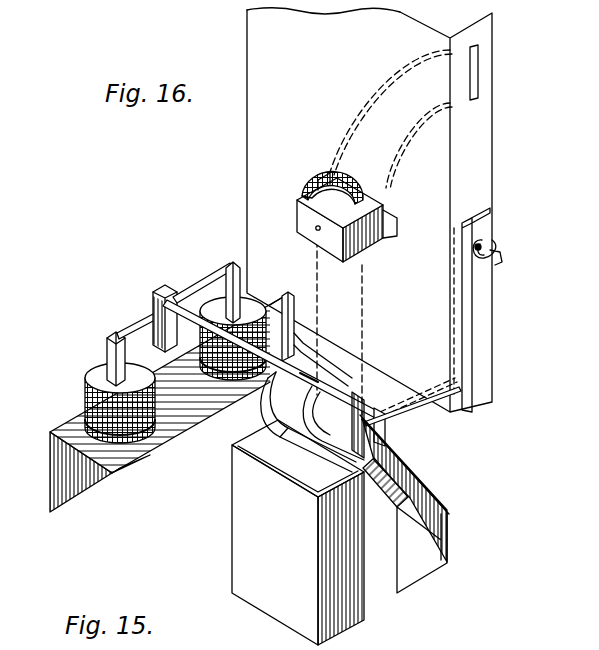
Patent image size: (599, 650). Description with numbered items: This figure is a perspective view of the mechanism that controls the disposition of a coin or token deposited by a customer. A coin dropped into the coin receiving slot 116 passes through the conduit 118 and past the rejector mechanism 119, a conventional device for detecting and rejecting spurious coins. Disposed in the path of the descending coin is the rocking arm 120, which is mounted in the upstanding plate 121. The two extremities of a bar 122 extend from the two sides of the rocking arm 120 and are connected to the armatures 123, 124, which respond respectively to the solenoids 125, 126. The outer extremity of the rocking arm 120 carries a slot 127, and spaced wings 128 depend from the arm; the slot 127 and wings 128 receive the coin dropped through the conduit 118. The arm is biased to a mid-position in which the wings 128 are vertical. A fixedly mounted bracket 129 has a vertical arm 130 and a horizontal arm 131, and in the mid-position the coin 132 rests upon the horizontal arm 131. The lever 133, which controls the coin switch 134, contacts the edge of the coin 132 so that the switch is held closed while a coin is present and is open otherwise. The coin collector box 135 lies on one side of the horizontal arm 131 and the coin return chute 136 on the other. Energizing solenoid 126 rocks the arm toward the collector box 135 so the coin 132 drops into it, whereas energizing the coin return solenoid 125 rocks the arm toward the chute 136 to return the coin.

The coin receiving slot 116 is at (480, 77).
The conduit 118 is at (386, 89).
The rejector mechanism 119 is at (320, 177).
The rocking arm 120 is at (215, 391).
The upstanding plate 121 is at (154, 284).
The bar 122 is at (133, 322).
The armature 123 is at (118, 355).
The armature 124 is at (218, 277).
The coin return solenoid 125 is at (83, 400).
The solenoid 126 is at (226, 372).
The slot 127 is at (352, 392).
The spaced wings 128 is at (372, 443).
The bracket 129 is at (298, 326).
The vertical arm 130 is at (279, 312).
The horizontal arm 131 is at (305, 433).
The coin 132 is at (338, 385).
The lever 133 is at (389, 402).
The coin switch 134 is at (490, 305).
The coin collector box 135 is at (240, 540).
The coin return chute 136 is at (420, 498).